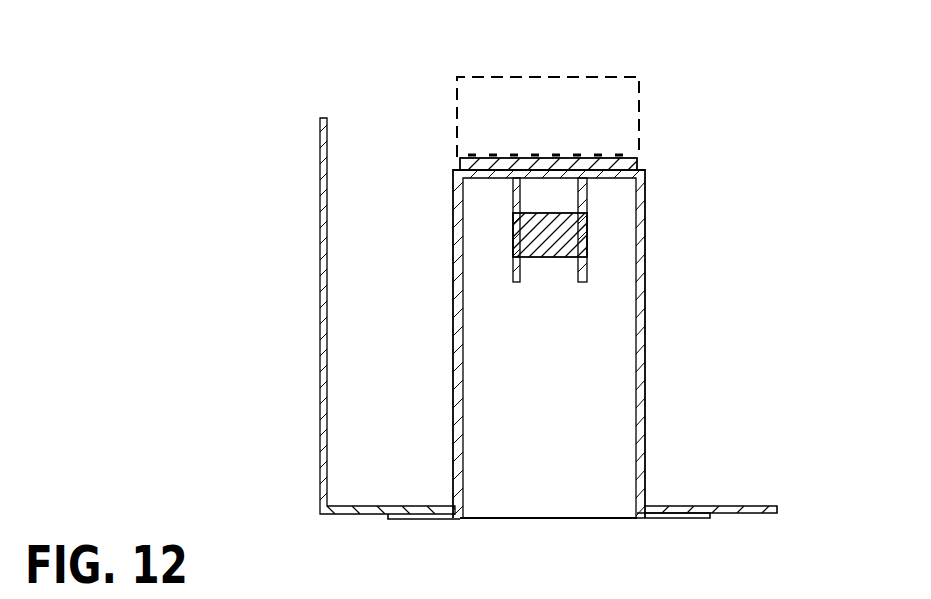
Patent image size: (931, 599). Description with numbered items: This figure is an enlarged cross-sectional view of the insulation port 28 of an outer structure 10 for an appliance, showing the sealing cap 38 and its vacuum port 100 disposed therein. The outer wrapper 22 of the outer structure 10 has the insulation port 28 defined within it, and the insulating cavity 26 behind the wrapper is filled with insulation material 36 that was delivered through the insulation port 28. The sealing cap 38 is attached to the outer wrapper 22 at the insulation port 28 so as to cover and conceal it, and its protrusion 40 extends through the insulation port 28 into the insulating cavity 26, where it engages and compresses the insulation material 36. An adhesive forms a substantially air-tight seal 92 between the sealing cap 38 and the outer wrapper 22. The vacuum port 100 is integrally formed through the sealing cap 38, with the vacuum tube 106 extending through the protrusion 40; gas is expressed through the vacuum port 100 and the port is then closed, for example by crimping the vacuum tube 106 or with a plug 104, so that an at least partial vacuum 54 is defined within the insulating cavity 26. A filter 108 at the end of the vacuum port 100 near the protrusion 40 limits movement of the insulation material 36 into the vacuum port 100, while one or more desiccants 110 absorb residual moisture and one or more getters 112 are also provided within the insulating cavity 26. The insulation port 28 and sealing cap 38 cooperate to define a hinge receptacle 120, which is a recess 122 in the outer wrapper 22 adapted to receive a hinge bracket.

The outer structure 10 is at (266, 323).
The outer wrapper 22 is at (392, 381).
The insulating cavity 26 is at (389, 167).
The insulation port 28 is at (504, 527).
The insulation material 36 is at (376, 238).
The sealing cap 38 is at (635, 468).
The protrusion 40 is at (643, 287).
The at least partial vacuum 54 is at (697, 158).
The substantially air-tight seal 92 is at (385, 503).
The vacuum port 100 is at (601, 216).
The plug 104 is at (550, 245).
The vacuum tube 106 is at (512, 199).
The filter 108 is at (610, 157).
The desiccant 110 is at (498, 122).
The getter 112 is at (590, 123).
The hinge receptacle 120 is at (608, 377).
The recess 122 is at (522, 452).